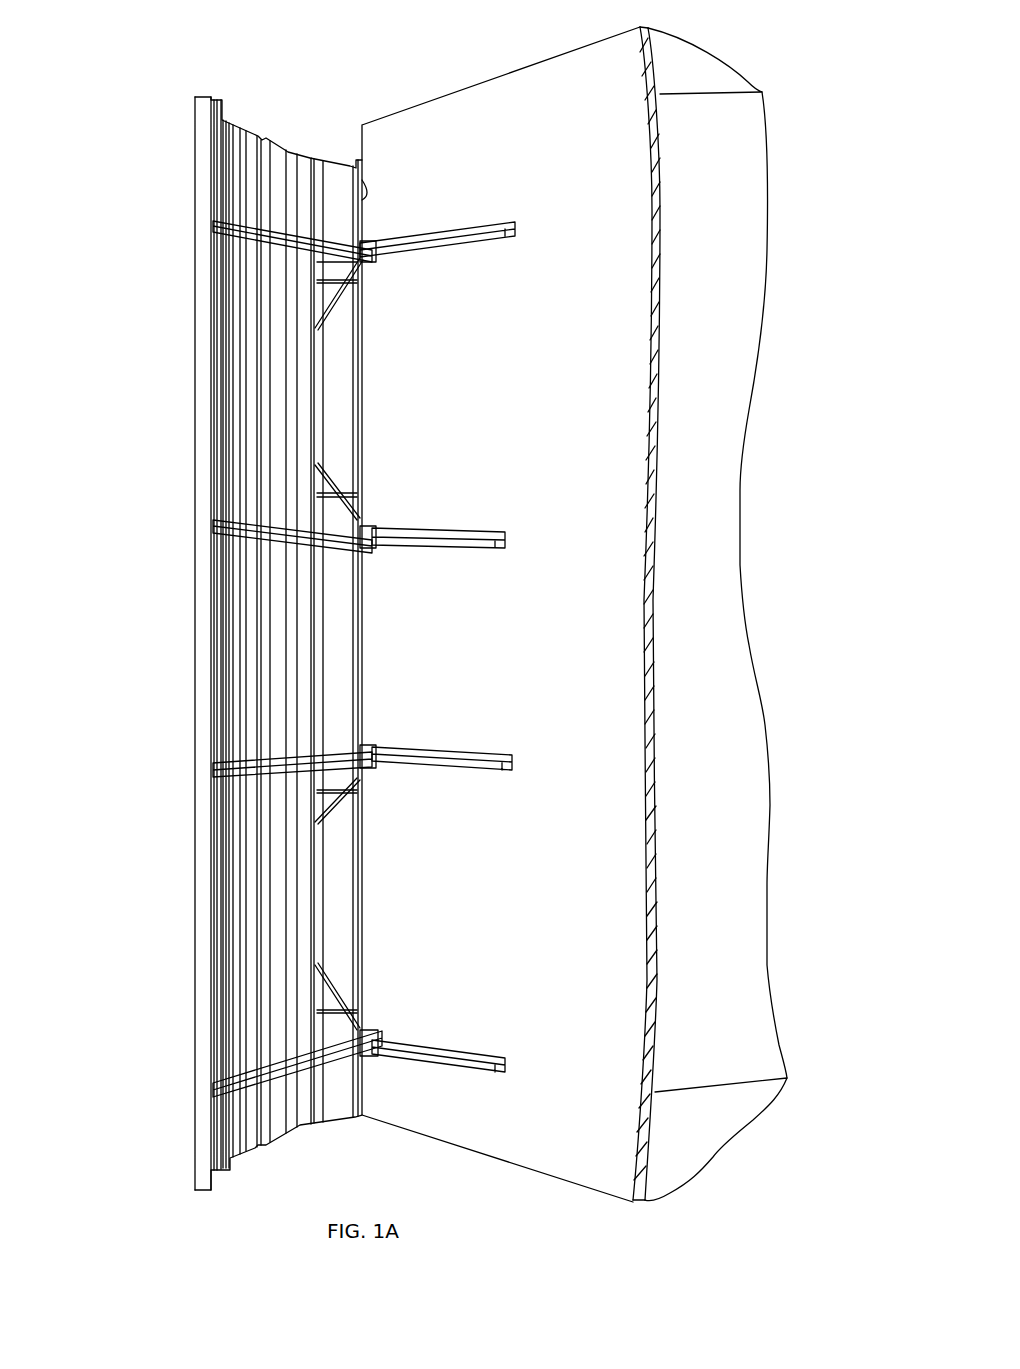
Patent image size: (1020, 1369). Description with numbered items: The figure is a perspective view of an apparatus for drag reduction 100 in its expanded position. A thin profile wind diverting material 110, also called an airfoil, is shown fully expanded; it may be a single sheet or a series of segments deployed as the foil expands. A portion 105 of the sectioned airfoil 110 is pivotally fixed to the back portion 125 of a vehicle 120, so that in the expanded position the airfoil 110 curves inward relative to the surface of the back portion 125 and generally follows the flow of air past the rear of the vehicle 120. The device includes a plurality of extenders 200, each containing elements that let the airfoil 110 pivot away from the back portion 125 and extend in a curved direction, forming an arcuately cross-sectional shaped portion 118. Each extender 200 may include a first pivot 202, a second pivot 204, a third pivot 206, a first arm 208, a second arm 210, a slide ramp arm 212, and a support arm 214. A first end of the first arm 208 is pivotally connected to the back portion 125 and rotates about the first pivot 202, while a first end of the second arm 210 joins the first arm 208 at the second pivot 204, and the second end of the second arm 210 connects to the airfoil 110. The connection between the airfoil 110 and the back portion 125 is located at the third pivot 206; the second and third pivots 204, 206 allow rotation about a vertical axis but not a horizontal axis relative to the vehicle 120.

The apparatus for drag reduction 100 is at (146, 128).
The portion of the sectioned airfoil 105 is at (362, 180).
The wind diverting material 110 is at (200, 345).
The arcuately cross-sectional shaped portion 118 is at (322, 1126).
The vehicle 120 is at (508, 75).
The back portion 125 is at (600, 116).
The extender 200 is at (440, 252).
The first pivot 202 is at (515, 232).
The second pivot 204 is at (364, 246).
The third pivot 206 is at (360, 632).
The first arm 208 is at (488, 223).
The second arm 210 is at (215, 226).
The slide ramp arm 212 is at (345, 292).
The support arm 214 is at (340, 316).